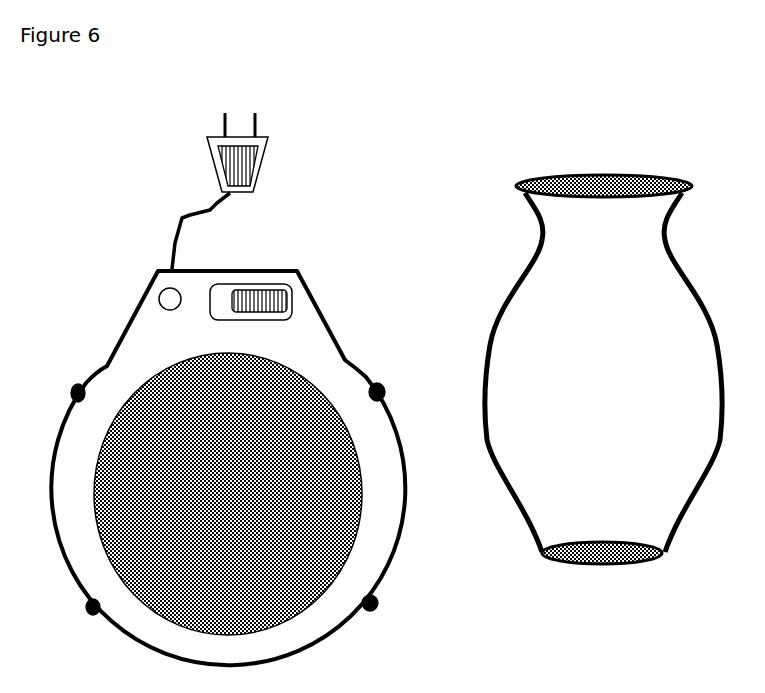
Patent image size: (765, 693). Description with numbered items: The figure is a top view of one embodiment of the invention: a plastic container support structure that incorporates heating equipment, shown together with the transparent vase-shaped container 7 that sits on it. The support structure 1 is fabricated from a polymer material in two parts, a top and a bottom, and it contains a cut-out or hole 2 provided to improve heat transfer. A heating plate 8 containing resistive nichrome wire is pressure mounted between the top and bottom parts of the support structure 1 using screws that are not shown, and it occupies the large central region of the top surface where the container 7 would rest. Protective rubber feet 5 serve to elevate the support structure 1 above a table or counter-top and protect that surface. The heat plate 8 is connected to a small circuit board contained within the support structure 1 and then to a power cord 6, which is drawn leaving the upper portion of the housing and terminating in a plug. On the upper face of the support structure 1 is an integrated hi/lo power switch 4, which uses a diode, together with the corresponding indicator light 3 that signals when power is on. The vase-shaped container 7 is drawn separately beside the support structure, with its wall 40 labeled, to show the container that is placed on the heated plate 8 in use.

The support structure 1 is at (245, 468).
The cut-out or hole 2 is at (222, 499).
The indicator light 3 is at (156, 296).
The hi/lo power switch 4 is at (288, 278).
The protective rubber feet 5 is at (381, 378).
The power cord 6 is at (262, 196).
The vase-shaped container 7 is at (588, 369).
The heating plate 8 is at (228, 494).
The container wall 40 is at (693, 372).